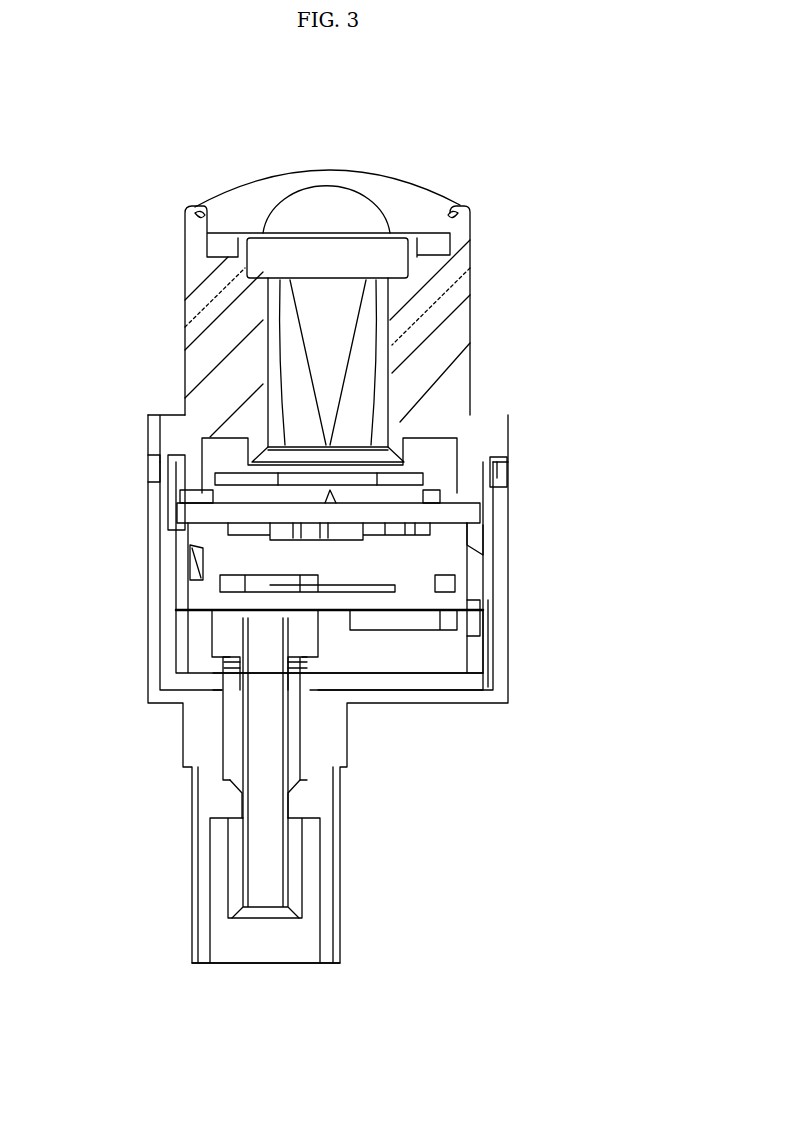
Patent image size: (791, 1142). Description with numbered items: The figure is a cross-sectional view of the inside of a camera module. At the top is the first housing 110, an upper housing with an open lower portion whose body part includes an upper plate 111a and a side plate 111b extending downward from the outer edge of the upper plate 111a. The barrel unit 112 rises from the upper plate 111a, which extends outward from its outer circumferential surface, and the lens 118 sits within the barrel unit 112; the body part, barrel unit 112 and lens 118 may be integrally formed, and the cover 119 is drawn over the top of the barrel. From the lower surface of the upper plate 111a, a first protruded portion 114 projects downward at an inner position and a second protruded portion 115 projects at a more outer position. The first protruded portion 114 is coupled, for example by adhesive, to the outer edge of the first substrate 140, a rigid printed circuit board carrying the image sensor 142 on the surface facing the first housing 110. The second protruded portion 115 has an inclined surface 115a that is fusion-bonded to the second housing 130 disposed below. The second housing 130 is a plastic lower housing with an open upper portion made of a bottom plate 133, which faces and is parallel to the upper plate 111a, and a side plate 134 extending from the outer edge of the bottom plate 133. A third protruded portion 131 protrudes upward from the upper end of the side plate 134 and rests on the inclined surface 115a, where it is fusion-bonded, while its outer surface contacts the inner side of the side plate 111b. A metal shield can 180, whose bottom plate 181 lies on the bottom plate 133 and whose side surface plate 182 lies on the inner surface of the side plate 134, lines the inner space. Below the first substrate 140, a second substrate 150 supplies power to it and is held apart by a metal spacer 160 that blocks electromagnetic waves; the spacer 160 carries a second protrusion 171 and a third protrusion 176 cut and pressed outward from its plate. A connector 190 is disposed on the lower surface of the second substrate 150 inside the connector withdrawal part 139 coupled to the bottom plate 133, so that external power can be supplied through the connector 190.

The first housing 110 is at (507, 420).
The upper plate 111a is at (162, 413).
The side plate 111b is at (148, 458).
The barrel unit 112 is at (470, 235).
The first protruded portion 114 is at (457, 440).
The second protruded portion 115 is at (507, 473).
The inclined surface 115a is at (165, 462).
The lens 118 is at (390, 345).
The cover 119 is at (357, 170).
The second housing 130 is at (483, 705).
The third protruded portion 131 is at (507, 467).
The bottom plate 133 is at (403, 697).
The side plate 134 is at (152, 533).
The connector withdrawal part 139 is at (338, 820).
The first substrate 140 is at (187, 513).
The image sensor 142 is at (197, 493).
The second substrate 150 is at (203, 603).
The spacer 160 is at (475, 585).
The second protrusion 171 is at (487, 538).
The third protrusion 176 is at (475, 618).
The shield can 180 is at (628, 672).
The bottom plate 181 is at (488, 645).
The side surface plate 182 is at (458, 680).
The connector 190 is at (257, 742).